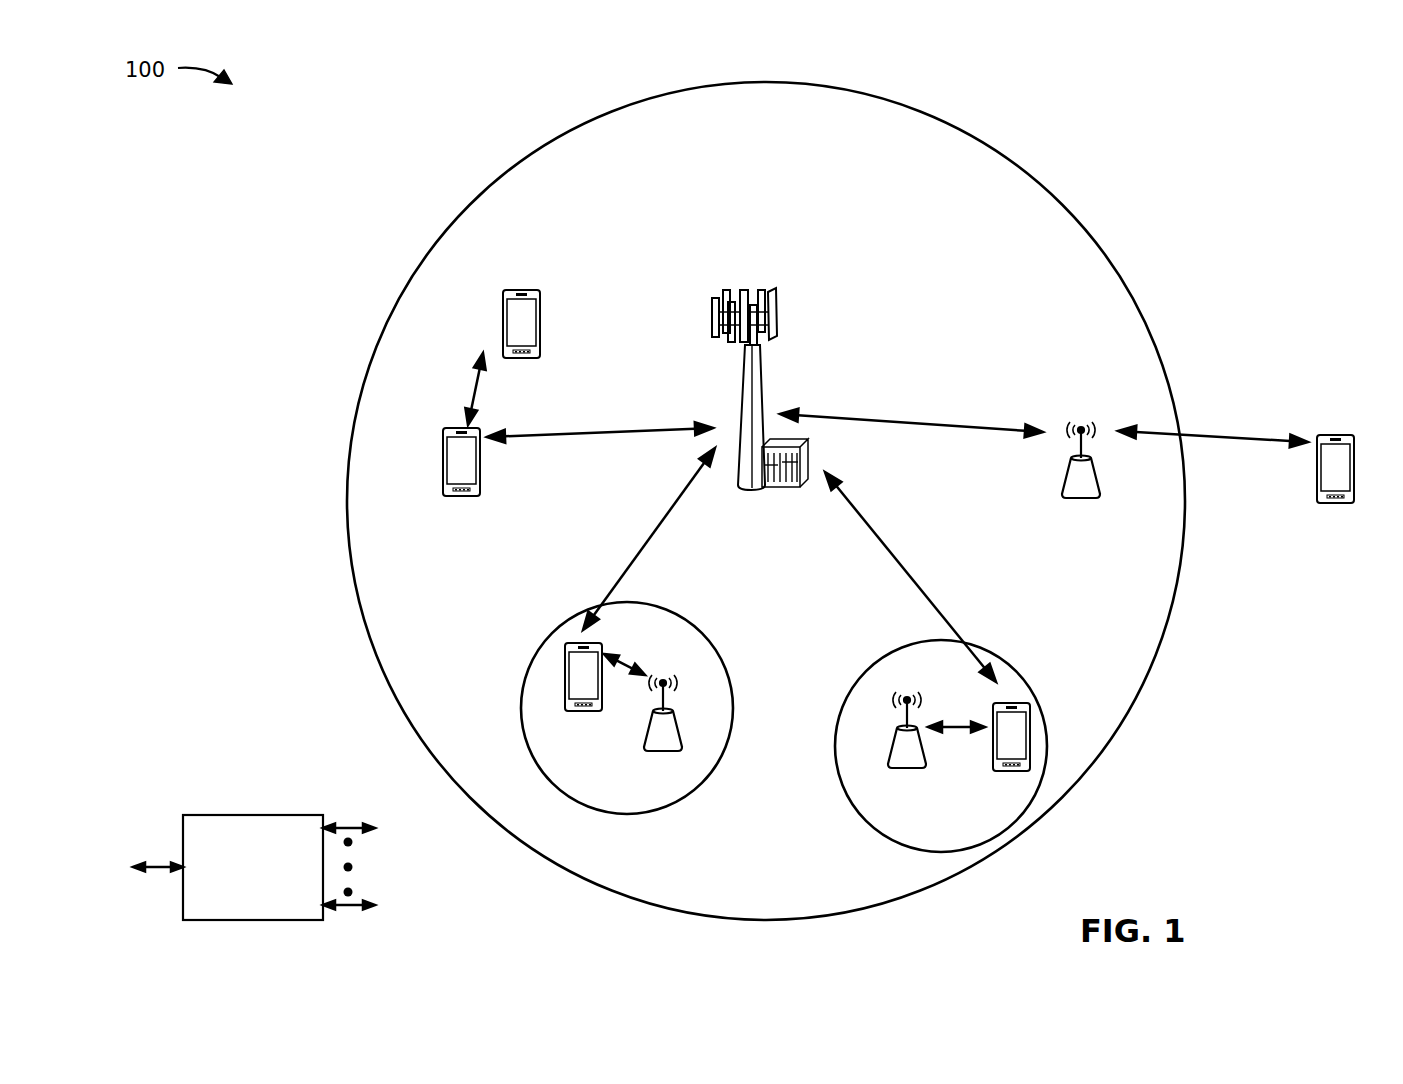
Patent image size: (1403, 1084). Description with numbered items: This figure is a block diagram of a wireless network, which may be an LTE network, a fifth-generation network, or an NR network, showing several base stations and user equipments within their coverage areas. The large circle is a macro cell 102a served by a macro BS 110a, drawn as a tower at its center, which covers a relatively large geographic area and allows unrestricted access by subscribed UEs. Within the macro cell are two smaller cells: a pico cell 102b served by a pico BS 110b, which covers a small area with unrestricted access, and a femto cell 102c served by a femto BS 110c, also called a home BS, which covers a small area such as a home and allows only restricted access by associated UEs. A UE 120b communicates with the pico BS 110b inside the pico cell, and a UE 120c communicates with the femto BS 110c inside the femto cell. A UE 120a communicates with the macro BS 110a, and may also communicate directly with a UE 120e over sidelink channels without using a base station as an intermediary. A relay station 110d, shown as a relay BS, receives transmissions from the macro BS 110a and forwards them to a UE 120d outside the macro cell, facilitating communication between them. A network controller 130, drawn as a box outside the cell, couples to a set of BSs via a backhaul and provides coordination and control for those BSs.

The macro cell 102a is at (1042, 190).
The pico cell 102b is at (718, 650).
The femto cell 102c is at (868, 668).
The macro BS 110a is at (752, 282).
The pico BS 110b is at (685, 740).
The femto BS 110c is at (890, 760).
The relay station 110d is at (1081, 425).
The UE 120a is at (443, 460).
The UE 120b is at (575, 713).
The UE 120c is at (1000, 775).
The UE 120d is at (1352, 440).
The UE 120e is at (503, 310).
The network controller 130 is at (250, 815).